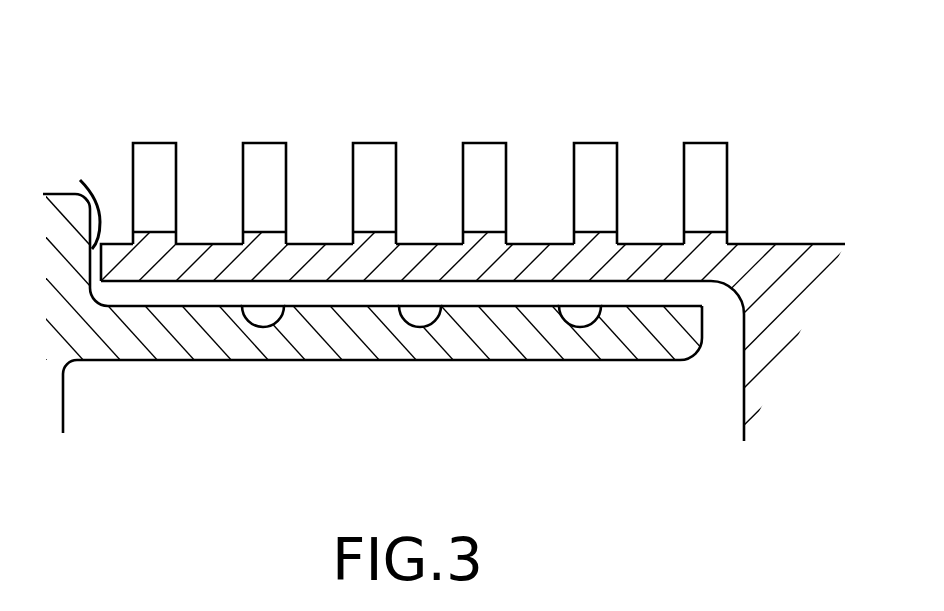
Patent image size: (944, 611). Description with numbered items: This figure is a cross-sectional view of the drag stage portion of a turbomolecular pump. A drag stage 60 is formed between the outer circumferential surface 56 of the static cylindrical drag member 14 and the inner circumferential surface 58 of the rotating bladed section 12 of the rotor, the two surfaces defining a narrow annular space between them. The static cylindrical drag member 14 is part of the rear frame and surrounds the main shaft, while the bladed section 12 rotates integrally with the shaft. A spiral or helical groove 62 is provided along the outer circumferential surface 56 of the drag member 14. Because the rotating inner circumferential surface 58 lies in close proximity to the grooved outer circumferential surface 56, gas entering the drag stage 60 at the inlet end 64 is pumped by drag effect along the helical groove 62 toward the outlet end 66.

The bladed section 12 is at (802, 244).
The static cylindrical drag member 14 is at (487, 362).
The outer circumferential surface 56 is at (352, 312).
The inner circumferential surface 58 is at (383, 280).
The drag stage 60 is at (107, 191).
The helical groove 62 is at (583, 327).
The inlet end 64 is at (80, 180).
The outlet end 66 is at (720, 318).